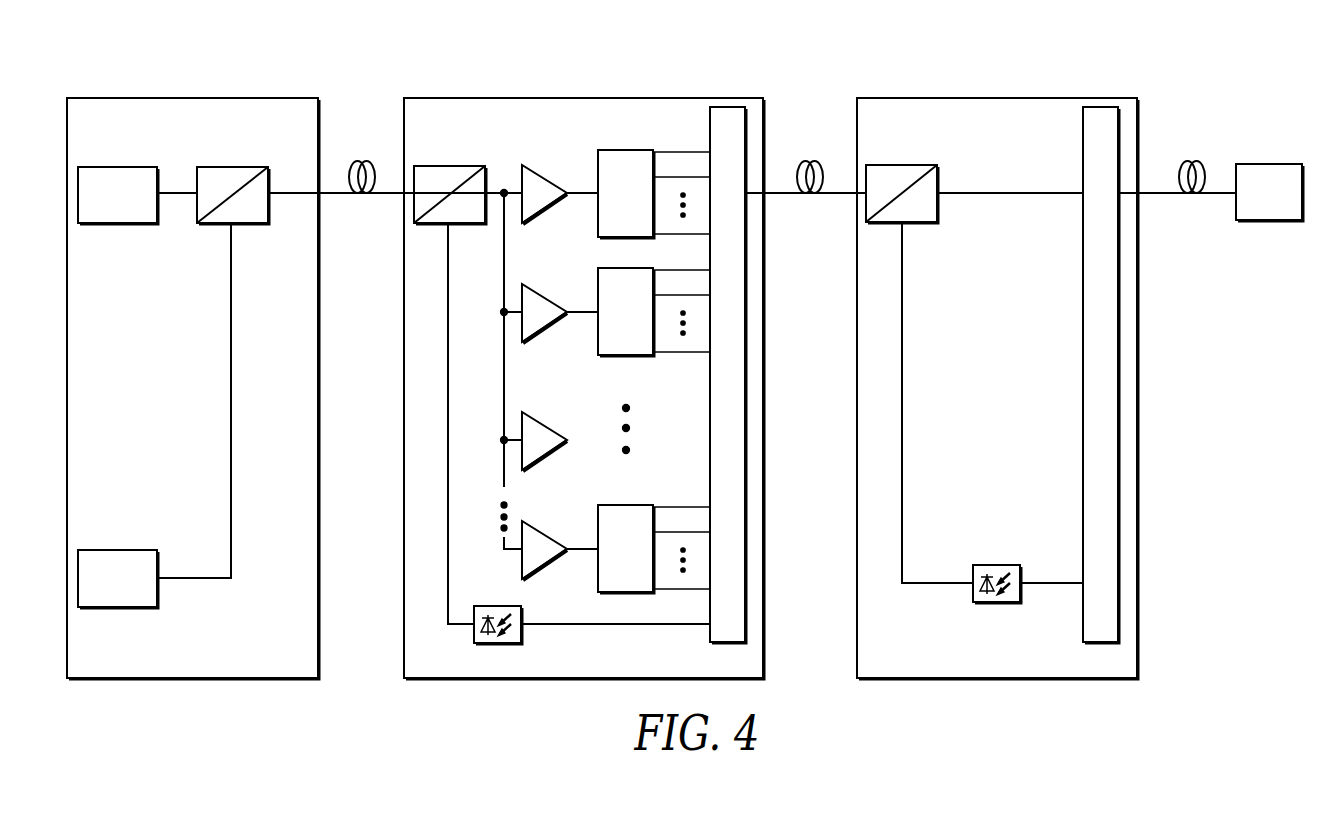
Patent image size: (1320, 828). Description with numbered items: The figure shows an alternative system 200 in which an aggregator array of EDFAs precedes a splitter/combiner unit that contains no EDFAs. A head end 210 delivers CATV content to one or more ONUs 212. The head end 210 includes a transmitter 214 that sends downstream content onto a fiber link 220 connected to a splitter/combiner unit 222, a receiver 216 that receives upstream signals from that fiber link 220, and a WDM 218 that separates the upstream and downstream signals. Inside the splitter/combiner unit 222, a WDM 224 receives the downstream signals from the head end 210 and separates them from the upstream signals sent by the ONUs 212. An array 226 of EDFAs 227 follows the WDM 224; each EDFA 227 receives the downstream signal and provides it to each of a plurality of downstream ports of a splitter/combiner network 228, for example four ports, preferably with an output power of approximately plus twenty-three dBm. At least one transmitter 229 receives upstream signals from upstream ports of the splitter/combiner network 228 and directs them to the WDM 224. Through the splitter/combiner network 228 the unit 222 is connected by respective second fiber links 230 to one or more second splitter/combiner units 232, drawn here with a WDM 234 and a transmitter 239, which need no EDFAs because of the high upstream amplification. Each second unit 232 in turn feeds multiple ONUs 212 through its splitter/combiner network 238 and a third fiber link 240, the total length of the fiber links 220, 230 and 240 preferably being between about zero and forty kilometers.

The alternative system 200 is at (1243, 47).
The head end 210 is at (197, 76).
The ONU 212 is at (1268, 163).
The transmitter 214 is at (126, 224).
The receiver 216 is at (116, 550).
The WDM 218 is at (255, 225).
The fiber link 220 is at (363, 150).
The splitter/combiner unit 222 is at (562, 97).
The WDM 224 is at (486, 177).
The array of EDFAs 226 is at (559, 170).
The EDFA 227 is at (549, 209).
The splitter/combiner network 228 is at (728, 106).
The transmitter 229 is at (481, 606).
The second fiber link 230 is at (814, 148).
The second splitter/combiner unit 232 is at (974, 97).
The WDM 234 is at (937, 167).
The splitter/combiner network 238 is at (1083, 338).
The transmitter 239 is at (995, 565).
The third fiber link 240 is at (1199, 140).